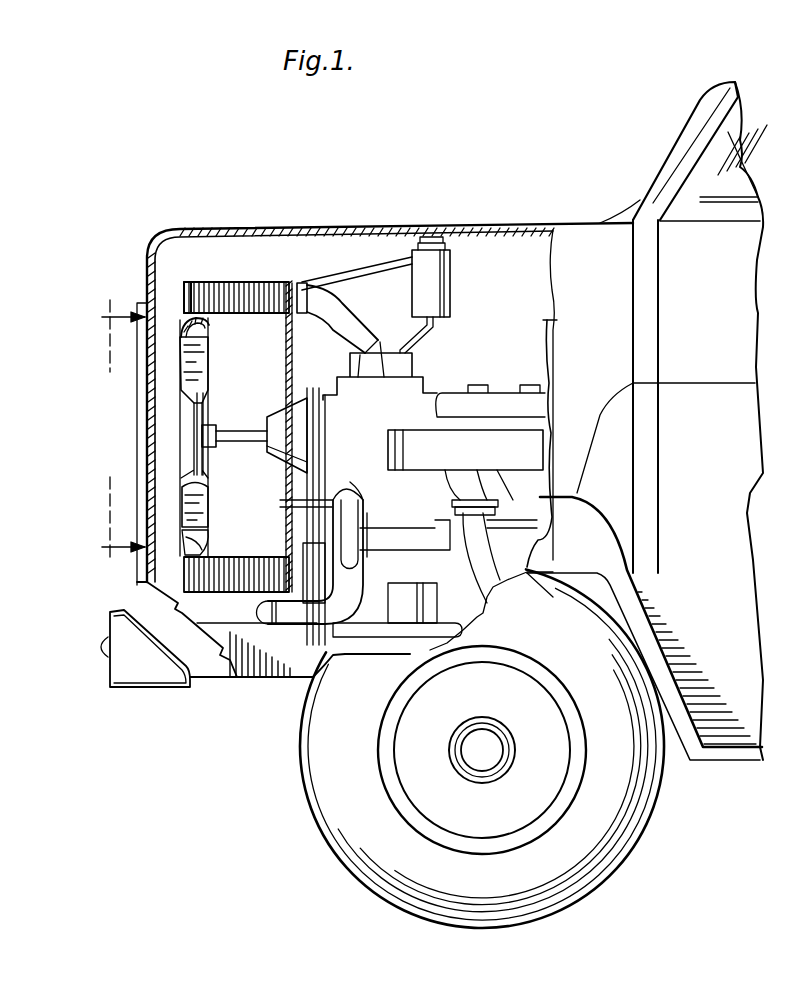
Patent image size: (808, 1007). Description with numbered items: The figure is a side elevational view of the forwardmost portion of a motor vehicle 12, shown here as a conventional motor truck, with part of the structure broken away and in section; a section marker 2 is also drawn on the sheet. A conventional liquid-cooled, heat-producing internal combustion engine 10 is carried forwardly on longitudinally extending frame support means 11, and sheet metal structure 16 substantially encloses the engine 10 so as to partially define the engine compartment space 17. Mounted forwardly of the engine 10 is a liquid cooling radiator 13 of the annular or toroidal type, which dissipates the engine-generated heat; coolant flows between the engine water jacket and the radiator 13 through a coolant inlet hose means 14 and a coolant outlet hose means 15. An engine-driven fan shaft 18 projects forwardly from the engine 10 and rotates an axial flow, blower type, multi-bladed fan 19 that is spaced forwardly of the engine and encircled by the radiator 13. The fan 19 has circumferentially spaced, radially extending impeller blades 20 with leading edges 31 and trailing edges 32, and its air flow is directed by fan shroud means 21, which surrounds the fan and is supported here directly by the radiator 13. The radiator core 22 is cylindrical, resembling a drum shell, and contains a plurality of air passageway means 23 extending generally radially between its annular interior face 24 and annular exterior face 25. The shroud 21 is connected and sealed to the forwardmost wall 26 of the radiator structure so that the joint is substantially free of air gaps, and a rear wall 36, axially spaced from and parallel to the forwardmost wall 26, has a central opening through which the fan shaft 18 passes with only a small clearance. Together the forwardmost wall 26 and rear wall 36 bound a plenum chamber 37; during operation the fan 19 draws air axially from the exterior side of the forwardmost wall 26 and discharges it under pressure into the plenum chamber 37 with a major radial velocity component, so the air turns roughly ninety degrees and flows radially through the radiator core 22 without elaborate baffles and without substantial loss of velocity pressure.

The section line 2- 2 is at (104, 428).
The internal combustion engine 10 is at (392, 418).
The frame support means 11 is at (238, 680).
The motor vehicle 12 is at (640, 178).
The liquid cooling radiator 13 is at (182, 326).
The coolant inlet hose means 14 is at (368, 284).
The coolant outlet hose means 15 is at (293, 623).
The sheet metal structure 16 is at (247, 228).
The engine compartment space 17 is at (510, 317).
The fan shaft 18 is at (236, 432).
The fan 19 is at (181, 427).
The impeller blades 20 is at (214, 365).
The fan shroud means 21 is at (180, 328).
The radiator core 22 is at (208, 283).
The air passageway means 23 is at (262, 262).
The annular interior face 24 is at (308, 436).
The annular exterior face 25 is at (300, 343).
The forwardmost wall 26 is at (150, 570).
The leading edges 31 is at (177, 372).
The trailing edges 32 is at (208, 500).
The rear wall 36 is at (352, 481).
The plenum chamber 37 is at (262, 557).